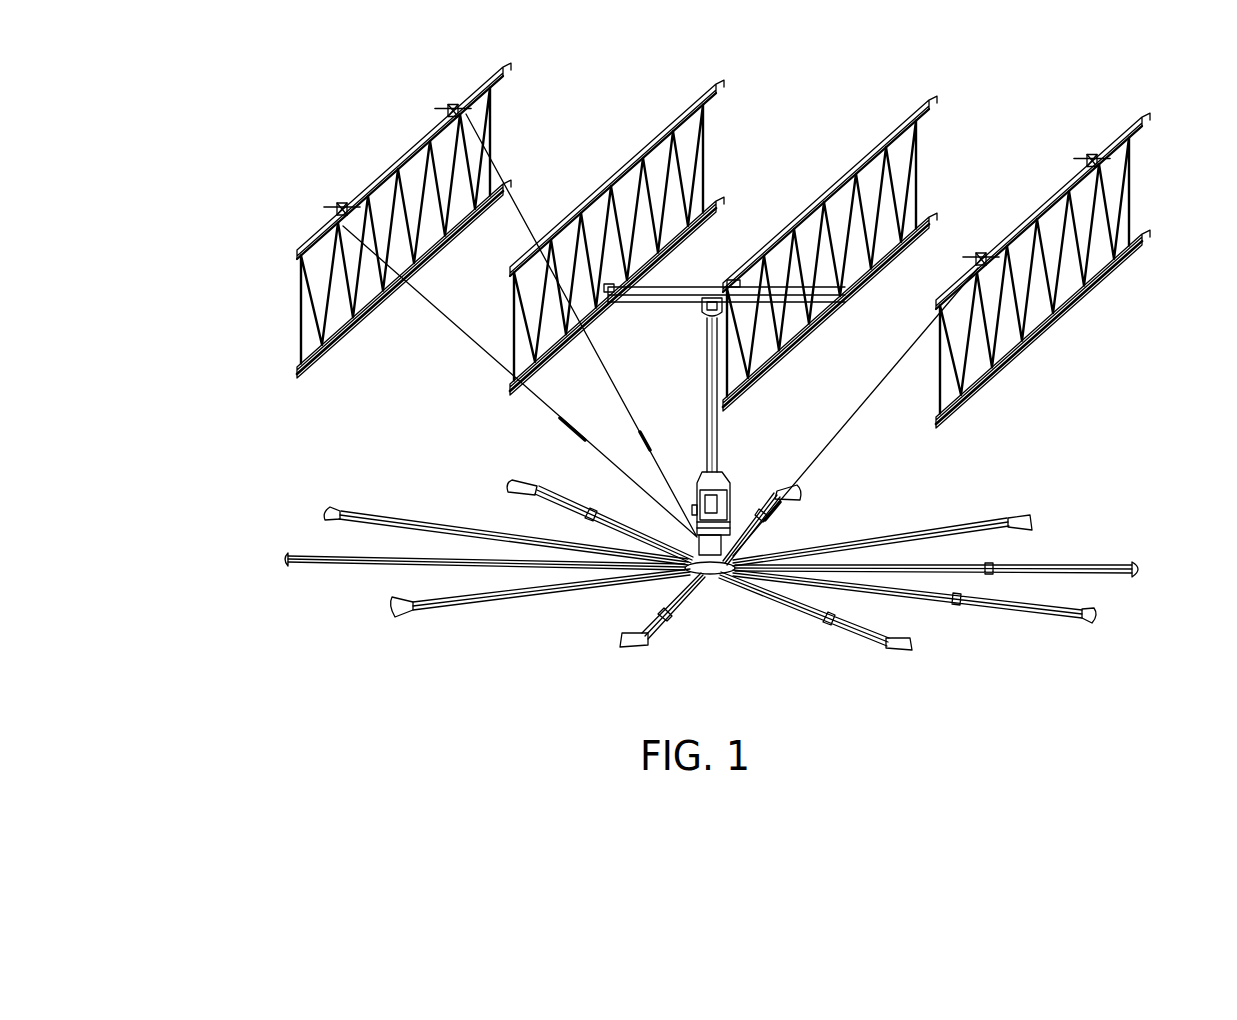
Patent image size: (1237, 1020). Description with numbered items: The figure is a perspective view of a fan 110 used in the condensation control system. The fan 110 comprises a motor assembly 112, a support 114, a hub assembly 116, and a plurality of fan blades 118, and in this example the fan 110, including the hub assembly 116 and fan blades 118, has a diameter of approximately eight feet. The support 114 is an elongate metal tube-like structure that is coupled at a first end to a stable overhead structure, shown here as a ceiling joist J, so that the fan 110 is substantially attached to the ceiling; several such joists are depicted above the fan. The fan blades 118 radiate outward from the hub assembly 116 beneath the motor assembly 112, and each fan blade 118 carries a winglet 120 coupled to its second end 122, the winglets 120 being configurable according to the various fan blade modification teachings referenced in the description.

The fan 110 is at (713, 423).
The motor assembly 112 is at (742, 493).
The support 114 is at (700, 335).
The hub assembly 116 is at (715, 580).
The fan blades 118 is at (333, 563).
The winglet 120 is at (331, 507).
The second end 122 is at (283, 550).
The ceiling joist J is at (850, 153).